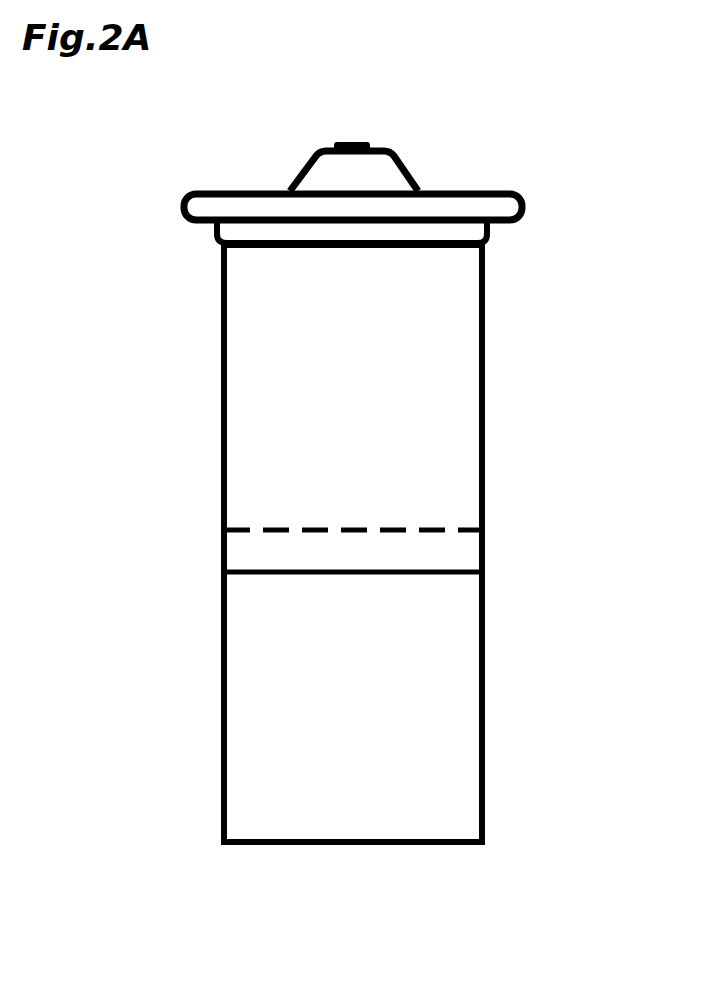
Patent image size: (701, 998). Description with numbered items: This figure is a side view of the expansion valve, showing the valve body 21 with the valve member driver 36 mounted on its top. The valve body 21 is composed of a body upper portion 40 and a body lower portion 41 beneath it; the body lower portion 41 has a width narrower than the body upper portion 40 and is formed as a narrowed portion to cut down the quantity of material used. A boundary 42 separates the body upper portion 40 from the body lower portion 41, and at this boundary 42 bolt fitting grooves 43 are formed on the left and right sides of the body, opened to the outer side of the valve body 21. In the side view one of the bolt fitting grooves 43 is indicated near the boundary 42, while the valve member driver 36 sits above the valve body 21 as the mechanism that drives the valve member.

The valve member driver 36 is at (402, 167).
The valve body 21 is at (483, 300).
The body upper portion 40 is at (465, 434).
The body lower portion 41 is at (465, 740).
The boundary 42 is at (230, 556).
The bolt fitting groove 43 is at (432, 552).